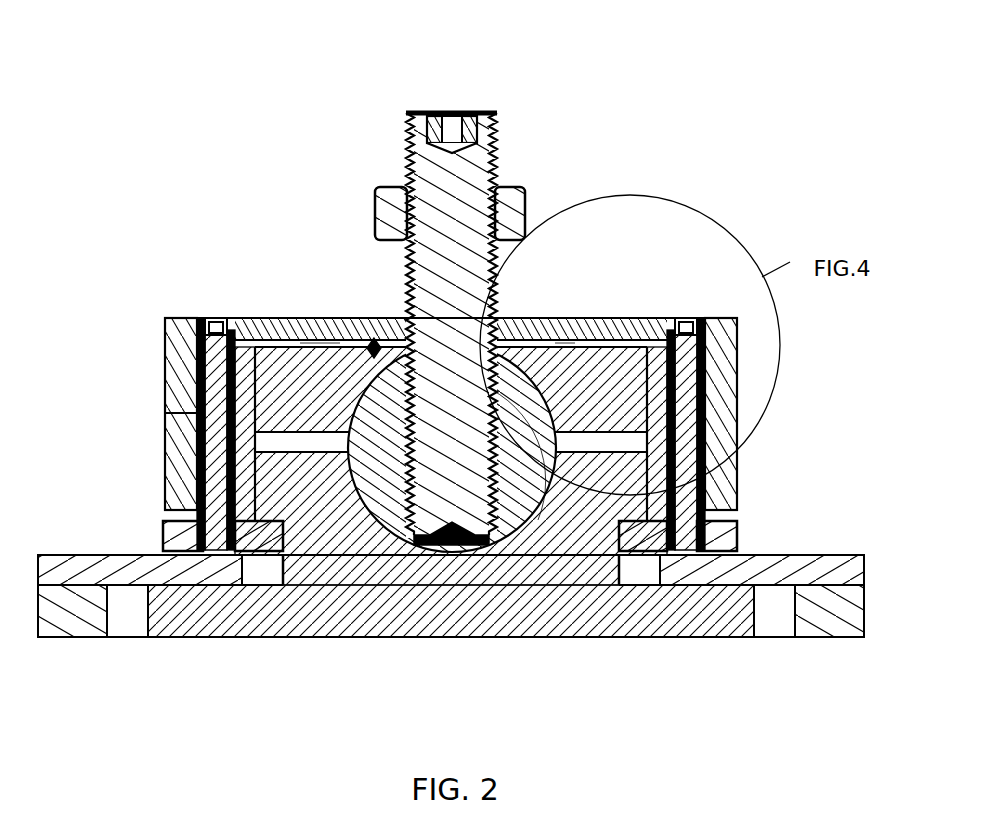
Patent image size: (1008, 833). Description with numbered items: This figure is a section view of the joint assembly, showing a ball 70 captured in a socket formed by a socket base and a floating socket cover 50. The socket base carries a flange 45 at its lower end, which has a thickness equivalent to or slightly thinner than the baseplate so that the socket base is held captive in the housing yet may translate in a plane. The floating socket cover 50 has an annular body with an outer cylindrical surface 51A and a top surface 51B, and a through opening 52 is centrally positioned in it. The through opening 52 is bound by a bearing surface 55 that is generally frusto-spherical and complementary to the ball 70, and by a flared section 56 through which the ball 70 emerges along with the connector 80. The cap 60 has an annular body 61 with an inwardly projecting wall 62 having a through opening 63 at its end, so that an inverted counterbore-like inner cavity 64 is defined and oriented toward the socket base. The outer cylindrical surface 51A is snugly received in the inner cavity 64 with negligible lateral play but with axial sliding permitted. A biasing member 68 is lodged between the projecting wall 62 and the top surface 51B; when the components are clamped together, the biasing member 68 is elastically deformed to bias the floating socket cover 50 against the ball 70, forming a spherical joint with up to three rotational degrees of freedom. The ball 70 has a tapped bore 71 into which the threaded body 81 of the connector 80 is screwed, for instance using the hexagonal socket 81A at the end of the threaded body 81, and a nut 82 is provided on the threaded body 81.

The flange 45 is at (695, 625).
The floating socket cover 50 is at (252, 470).
The outer cylindrical surface 51A is at (165, 405).
The top surface 51B is at (315, 343).
The through opening 52 is at (374, 340).
The bearing surface 55 is at (482, 385).
The flared section 56 is at (527, 340).
The cap 60 is at (188, 390).
The annular body 61 is at (730, 482).
The inwardly projecting wall 62 is at (612, 340).
The through opening 63 is at (560, 343).
The inner cavity 64 is at (655, 338).
The biasing member 68 is at (296, 343).
The ball 70 is at (363, 483).
The tapped bore 71 is at (372, 556).
The connector 80 is at (451, 362).
The threaded body 81 is at (478, 182).
The hexagonal socket 81A is at (464, 550).
The nut 82 is at (382, 192).